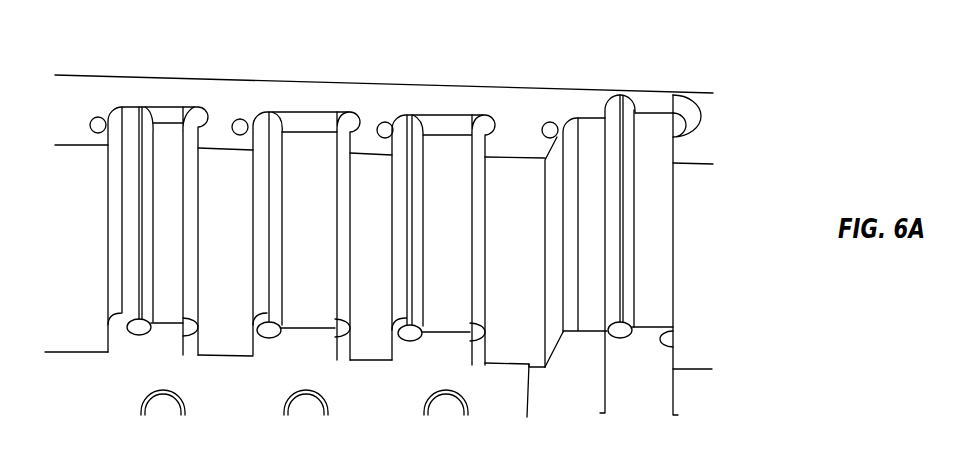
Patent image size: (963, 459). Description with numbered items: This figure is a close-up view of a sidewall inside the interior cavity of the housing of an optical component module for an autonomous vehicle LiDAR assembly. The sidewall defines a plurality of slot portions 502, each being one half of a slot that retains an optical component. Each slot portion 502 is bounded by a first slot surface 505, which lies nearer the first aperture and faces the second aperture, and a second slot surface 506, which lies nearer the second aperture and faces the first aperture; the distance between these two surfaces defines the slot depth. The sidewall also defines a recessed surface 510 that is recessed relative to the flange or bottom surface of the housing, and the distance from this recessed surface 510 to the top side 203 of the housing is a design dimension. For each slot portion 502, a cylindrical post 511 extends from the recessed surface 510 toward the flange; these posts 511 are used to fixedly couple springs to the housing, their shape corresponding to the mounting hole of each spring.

The top side 203 is at (391, 399).
The slot portion 502 is at (143, 346).
The first slot surface 505 is at (345, 163).
The second slot surface 506 is at (256, 168).
The recessed surface 510 is at (507, 99).
The post 511 is at (99, 117).